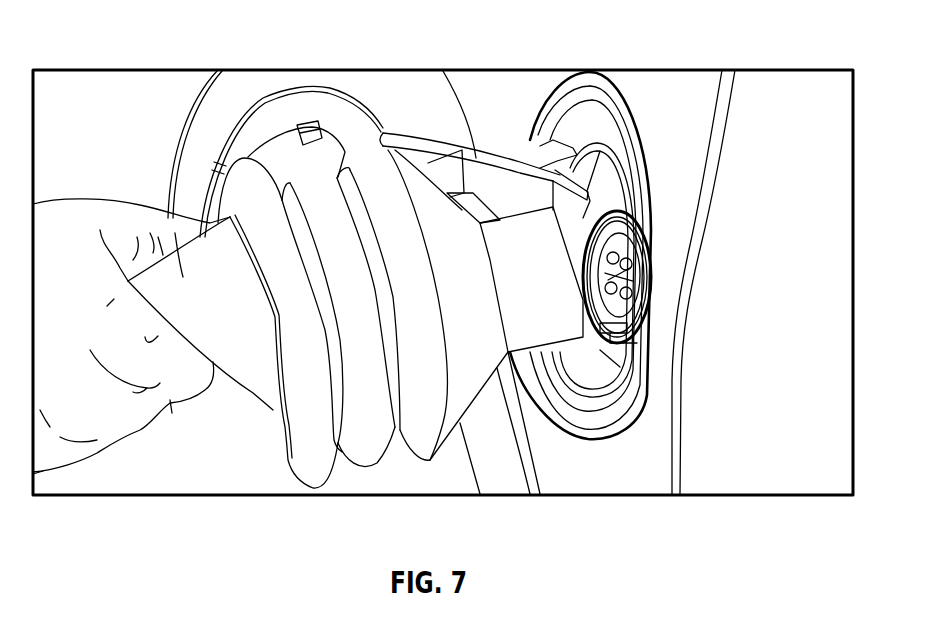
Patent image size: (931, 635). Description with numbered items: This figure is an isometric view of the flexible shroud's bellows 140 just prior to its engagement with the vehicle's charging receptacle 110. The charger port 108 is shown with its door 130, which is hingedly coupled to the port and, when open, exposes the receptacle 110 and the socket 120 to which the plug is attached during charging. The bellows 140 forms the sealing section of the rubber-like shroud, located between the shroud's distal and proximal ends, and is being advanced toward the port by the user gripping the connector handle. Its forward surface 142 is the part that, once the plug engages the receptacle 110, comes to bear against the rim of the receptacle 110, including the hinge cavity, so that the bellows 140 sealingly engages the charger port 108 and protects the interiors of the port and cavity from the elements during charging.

The charger port 108 is at (603, 116).
The receptacle 110 is at (632, 250).
The socket 120 is at (617, 275).
The door 130 is at (397, 97).
The bellows 140 is at (455, 250).
The forward surface 142 is at (187, 262).